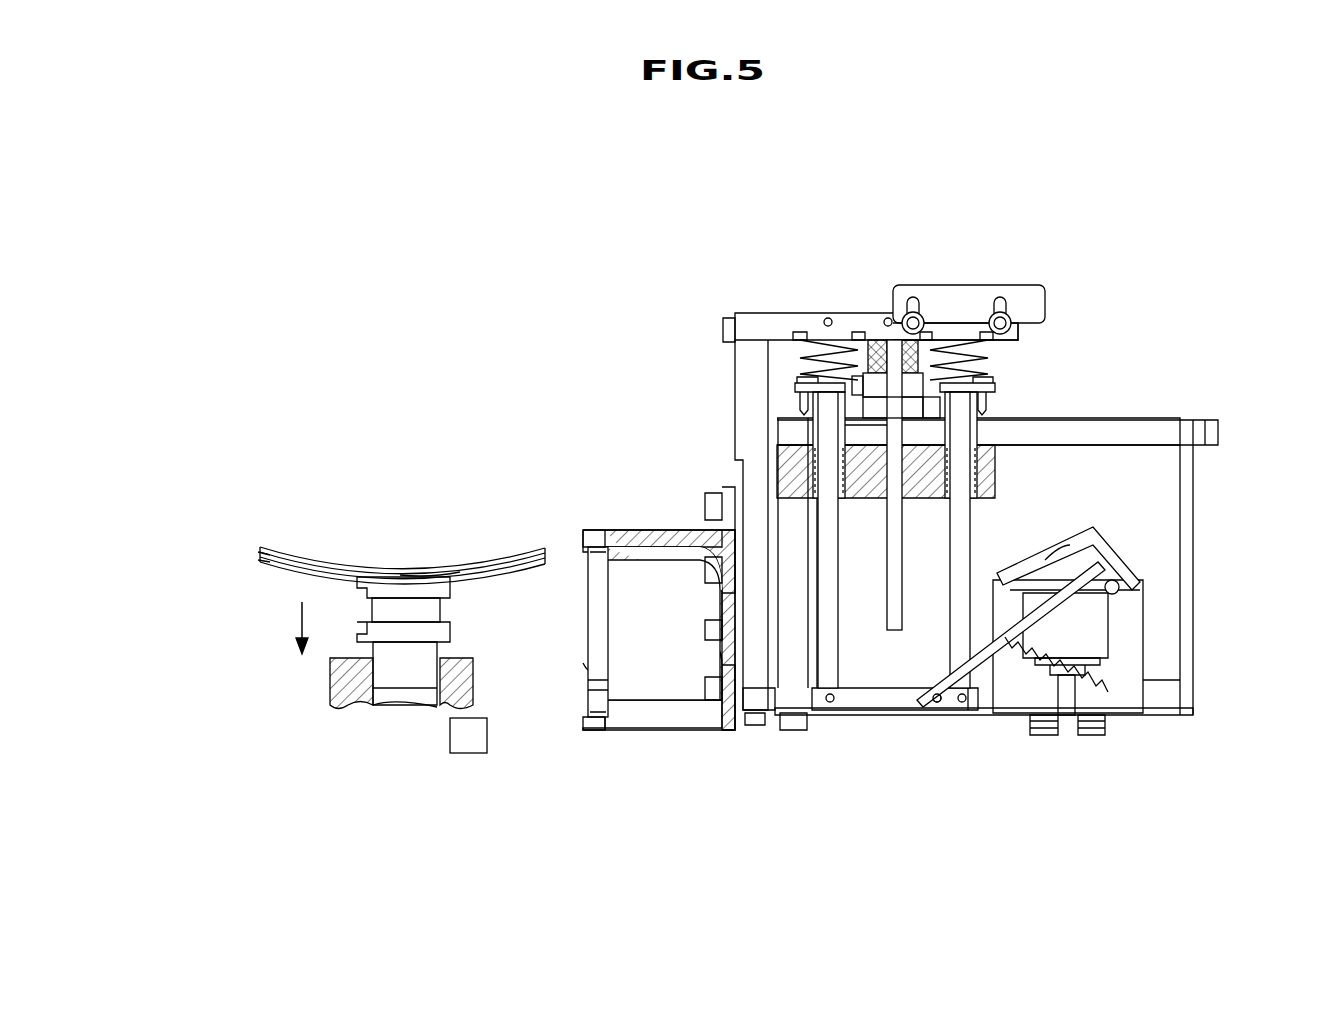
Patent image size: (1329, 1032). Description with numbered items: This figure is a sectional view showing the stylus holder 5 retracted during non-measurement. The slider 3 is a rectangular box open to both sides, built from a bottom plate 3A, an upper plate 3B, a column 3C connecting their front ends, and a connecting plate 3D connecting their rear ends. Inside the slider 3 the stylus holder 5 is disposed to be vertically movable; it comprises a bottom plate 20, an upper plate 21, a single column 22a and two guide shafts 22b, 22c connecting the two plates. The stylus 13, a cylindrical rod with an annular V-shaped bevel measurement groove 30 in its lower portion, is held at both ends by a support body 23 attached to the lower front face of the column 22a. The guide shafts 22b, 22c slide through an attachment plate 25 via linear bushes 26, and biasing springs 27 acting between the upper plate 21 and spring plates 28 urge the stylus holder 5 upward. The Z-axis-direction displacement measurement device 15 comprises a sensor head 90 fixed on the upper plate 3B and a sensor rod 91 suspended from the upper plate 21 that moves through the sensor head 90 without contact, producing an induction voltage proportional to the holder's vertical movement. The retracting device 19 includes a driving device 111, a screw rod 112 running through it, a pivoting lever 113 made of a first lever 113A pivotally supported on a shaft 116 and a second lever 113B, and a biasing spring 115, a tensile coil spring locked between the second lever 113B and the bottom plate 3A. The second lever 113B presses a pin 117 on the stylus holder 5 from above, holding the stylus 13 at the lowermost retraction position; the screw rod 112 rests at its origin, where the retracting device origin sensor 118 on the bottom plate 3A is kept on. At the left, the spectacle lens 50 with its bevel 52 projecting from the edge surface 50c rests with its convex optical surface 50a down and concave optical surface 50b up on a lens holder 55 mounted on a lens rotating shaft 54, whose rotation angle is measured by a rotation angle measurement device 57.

The slider 3 is at (1000, 579).
The bottom plate 3A is at (1175, 715).
The upper plate 3B is at (1160, 420).
The column 3C is at (762, 700).
The connecting plate 3D is at (1190, 685).
The stylus holder 5 is at (797, 282).
The stylus 13 is at (603, 622).
The Z-axis-direction displacement measurement device 15 is at (948, 383).
The retracting device 19 is at (1095, 646).
The bottom plate 20 is at (900, 700).
The upper plate 21 is at (778, 325).
The column 22a is at (745, 365).
The guide shaft 22b is at (828, 655).
The guide shaft 22c is at (953, 622).
The support body 23 is at (630, 532).
The attachment plate 25 is at (995, 470).
The linear bush 26 is at (985, 450).
The biasing spring 27 is at (835, 335).
The spring plate 28 is at (795, 388).
The bevel measurement groove 30 is at (590, 690).
The spectacle lens 50 is at (298, 532).
The convex optical surface 50a is at (500, 570).
The concave optical surface 50b is at (500, 555).
The edge surface 50c is at (260, 548).
The bevel 52 is at (260, 560).
The lens rotating shaft 54 is at (473, 676).
The lens holder 55 is at (393, 675).
The rotation angle measurement device 57 is at (470, 735).
The sensor head 90 is at (880, 345).
The sensor rod 91 is at (900, 392).
The driving device 111 is at (1140, 640).
The screw rod 112 is at (1105, 693).
The pivoting lever 113 is at (1088, 631).
The first lever 113A is at (1045, 545).
The second lever 113B is at (978, 660).
The biasing spring 115 is at (1058, 700).
The shaft 116 is at (1120, 590).
The pin 117 is at (937, 705).
The retracting device origin sensor 118 is at (1095, 730).